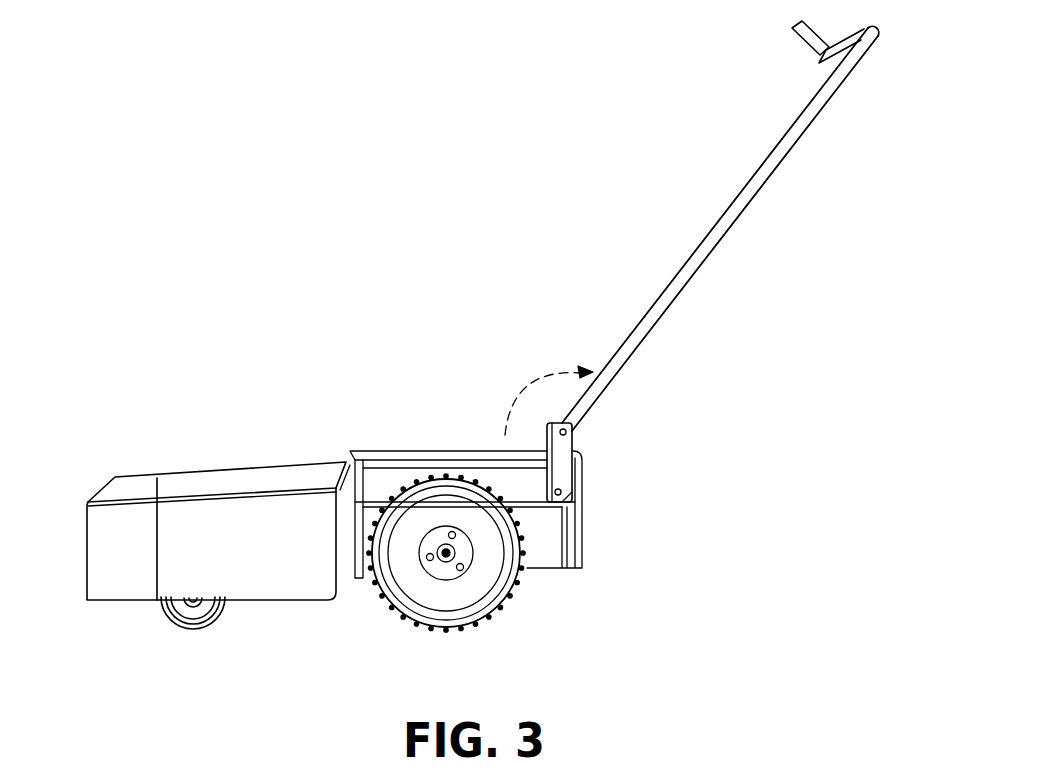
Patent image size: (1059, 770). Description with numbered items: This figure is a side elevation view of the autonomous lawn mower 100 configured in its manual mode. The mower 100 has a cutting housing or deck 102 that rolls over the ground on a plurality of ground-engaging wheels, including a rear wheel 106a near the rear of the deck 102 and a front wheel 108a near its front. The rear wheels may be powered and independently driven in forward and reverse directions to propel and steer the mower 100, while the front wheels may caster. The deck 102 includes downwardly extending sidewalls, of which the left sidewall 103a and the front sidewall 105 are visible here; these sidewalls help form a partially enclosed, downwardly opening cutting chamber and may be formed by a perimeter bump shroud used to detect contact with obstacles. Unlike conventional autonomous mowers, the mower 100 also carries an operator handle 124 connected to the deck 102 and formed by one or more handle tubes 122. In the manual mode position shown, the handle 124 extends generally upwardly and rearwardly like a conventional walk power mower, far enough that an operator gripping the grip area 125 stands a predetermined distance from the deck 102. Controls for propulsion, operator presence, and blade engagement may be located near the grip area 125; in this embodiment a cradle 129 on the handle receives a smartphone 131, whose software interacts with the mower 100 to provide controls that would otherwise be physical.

The autonomous lawn mower 100 is at (132, 183).
The cutting housing or deck 102 is at (96, 476).
The front sidewall 105 is at (87, 548).
The left sidewall 103a is at (293, 557).
The front wheel 108a is at (178, 630).
The rear wheel 106a is at (433, 636).
The handle tube 122 is at (642, 345).
The operator handle 124 is at (706, 221).
The grip area 125 is at (878, 34).
The cradle 129 is at (803, 50).
The smartphone 131 is at (793, 28).